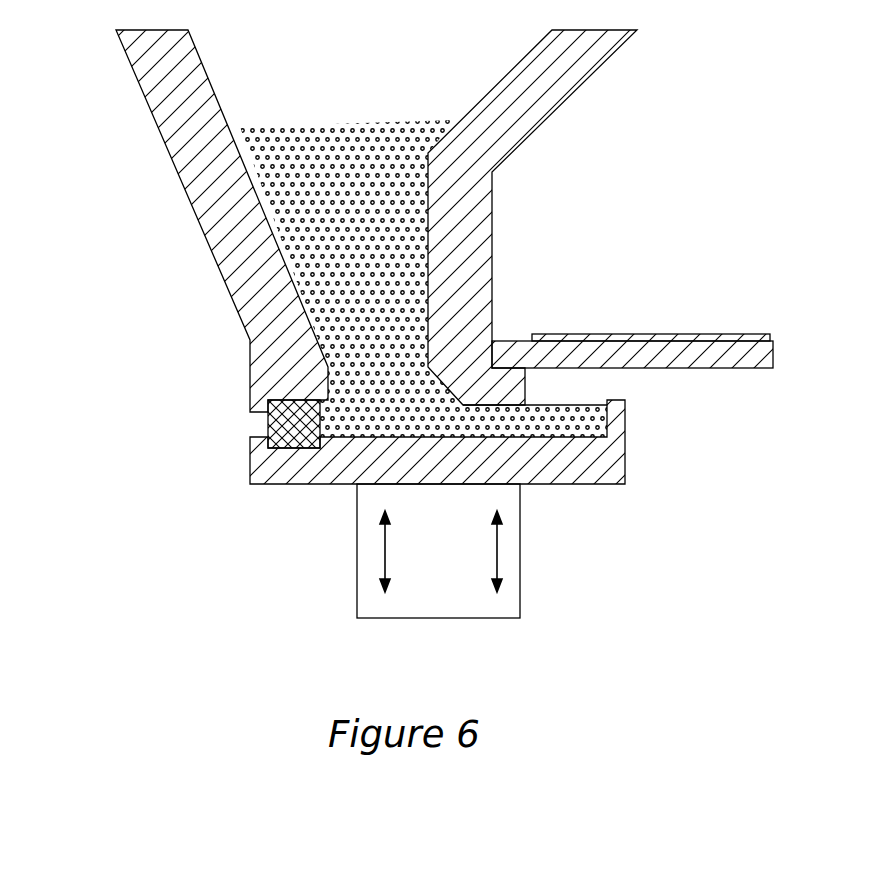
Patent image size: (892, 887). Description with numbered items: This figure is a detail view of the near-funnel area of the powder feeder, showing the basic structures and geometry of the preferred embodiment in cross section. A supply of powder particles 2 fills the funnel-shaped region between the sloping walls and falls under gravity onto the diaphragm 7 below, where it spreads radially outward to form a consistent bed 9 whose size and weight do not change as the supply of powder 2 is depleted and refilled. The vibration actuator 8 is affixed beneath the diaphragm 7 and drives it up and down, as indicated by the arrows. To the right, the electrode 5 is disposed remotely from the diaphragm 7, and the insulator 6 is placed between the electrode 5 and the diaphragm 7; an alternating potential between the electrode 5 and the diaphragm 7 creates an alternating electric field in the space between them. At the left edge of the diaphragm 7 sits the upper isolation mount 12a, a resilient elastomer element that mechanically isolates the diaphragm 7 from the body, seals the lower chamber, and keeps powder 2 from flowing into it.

The powder particles 2 is at (290, 145).
The electrode 5 is at (645, 337).
The insulator 6 is at (517, 363).
The diaphragm 7 is at (343, 458).
The vibration actuator 8 is at (447, 585).
The bed 9 is at (555, 440).
The upper isolation mount 12a is at (270, 428).